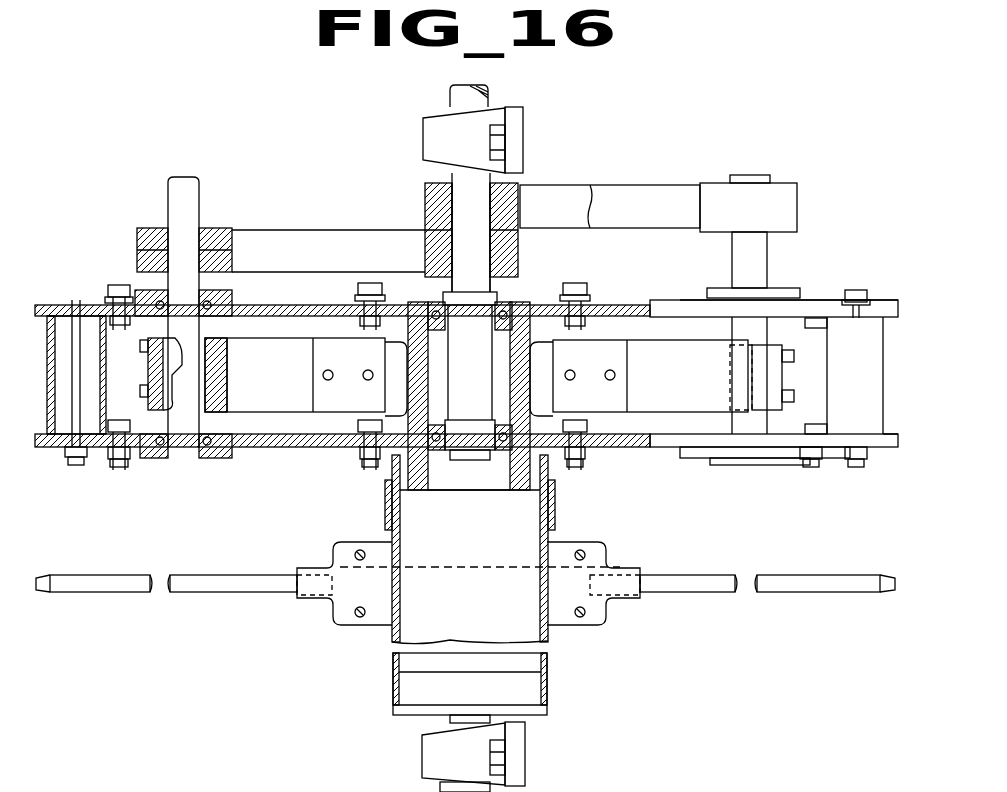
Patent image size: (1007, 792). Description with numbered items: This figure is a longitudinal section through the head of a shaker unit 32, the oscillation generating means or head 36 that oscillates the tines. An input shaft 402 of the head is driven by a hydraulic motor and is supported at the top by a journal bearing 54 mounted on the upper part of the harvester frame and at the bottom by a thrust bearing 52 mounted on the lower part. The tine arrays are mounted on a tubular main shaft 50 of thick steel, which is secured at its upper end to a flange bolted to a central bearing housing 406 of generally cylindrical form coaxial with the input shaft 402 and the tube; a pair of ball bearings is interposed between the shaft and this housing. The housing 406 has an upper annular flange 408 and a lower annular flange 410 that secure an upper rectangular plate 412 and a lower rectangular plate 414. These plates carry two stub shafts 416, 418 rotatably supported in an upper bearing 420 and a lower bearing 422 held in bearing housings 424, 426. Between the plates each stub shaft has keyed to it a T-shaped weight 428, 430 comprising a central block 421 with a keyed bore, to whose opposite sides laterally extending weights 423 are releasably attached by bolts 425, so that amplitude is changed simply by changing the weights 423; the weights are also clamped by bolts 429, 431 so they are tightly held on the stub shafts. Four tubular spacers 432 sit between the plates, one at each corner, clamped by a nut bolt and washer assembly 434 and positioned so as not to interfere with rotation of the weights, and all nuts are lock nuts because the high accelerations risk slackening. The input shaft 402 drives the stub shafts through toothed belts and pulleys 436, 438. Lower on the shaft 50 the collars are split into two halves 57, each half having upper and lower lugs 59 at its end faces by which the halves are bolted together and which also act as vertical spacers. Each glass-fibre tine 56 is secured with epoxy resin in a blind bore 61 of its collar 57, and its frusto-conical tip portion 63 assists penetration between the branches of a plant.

The input shaft 402 is at (448, 93).
The journal bearing 54 is at (424, 140).
The oscillation generating means or head 36 is at (762, 170).
The stub shaft 418 is at (192, 196).
The toothed belt and pulley 438 is at (366, 238).
The toothed belt and pulley 436 is at (618, 196).
The upper bearing 420 is at (160, 300).
The bearing housing 424 is at (245, 282).
The stub shaft 416 is at (730, 249).
The nut bolt and washer assembly 434 is at (80, 463).
The bolt 431 is at (102, 302).
The T-shaped weight 430 is at (264, 332).
The upper rectangular plate 412 is at (627, 304).
The T-shaped weight 428 is at (664, 340).
The laterally extending weight 423 is at (312, 348).
The upper annular flange 408 is at (392, 340).
The bolt 425 is at (322, 380).
The central block 421 is at (468, 375).
The central bearing housing 406 is at (402, 395).
The lower annular flange 410 is at (582, 395).
The bolt 429 is at (796, 396).
The tubular spacer 432 is at (47, 440).
The bearing housing 426 is at (255, 452).
The lower bearing 422 is at (208, 455).
The lower rectangular plate 414 is at (665, 447).
The lug 59 is at (600, 545).
The blind bore 61 is at (640, 567).
The tine 56 is at (170, 575).
The tip portion 63 is at (45, 586).
The shaker unit 32 is at (268, 620).
The collar half 57 is at (352, 606).
The main shaft 50 is at (393, 668).
The thrust bearing 52 is at (425, 754).